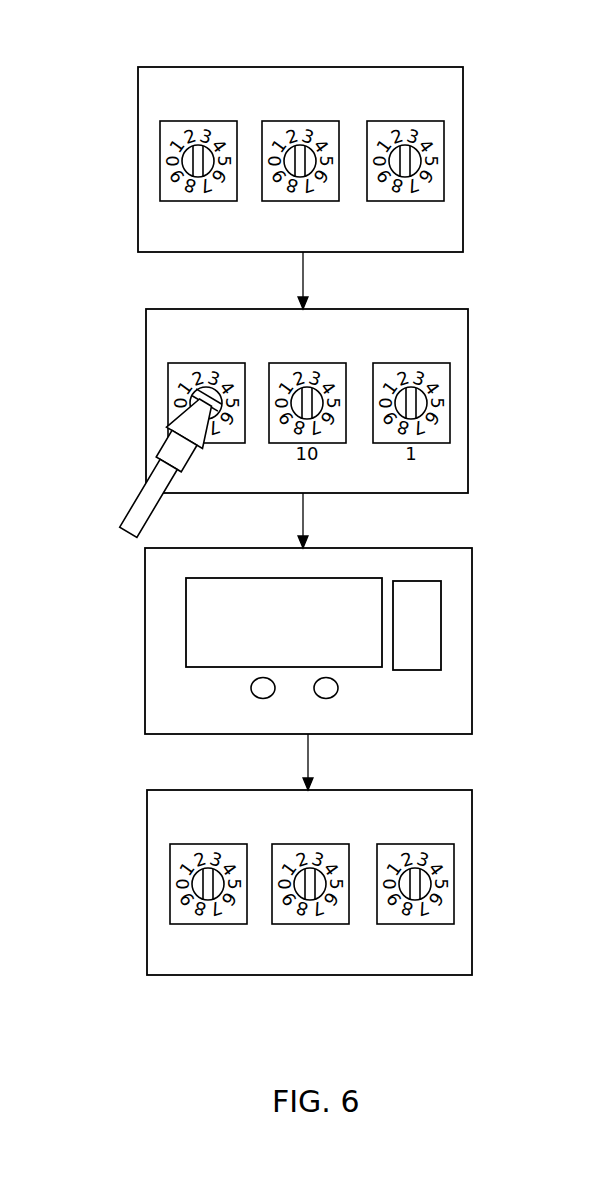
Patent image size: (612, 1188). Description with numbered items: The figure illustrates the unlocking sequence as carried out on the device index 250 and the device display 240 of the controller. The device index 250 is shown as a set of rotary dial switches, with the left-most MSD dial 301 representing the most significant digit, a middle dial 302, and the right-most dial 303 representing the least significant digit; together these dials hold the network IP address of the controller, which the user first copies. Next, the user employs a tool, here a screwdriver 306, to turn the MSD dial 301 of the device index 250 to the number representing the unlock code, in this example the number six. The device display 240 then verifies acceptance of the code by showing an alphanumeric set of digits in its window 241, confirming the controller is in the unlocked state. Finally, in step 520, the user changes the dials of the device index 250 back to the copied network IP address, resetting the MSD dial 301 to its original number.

The device index 250 is at (470, 347).
The MSD dial 301 is at (170, 120).
The dial 302 is at (275, 118).
The right most dial 303 is at (423, 118).
The screwdriver 306 is at (125, 515).
The device display 240 is at (143, 670).
The window 241 is at (347, 578).
The step 520 is at (473, 883).